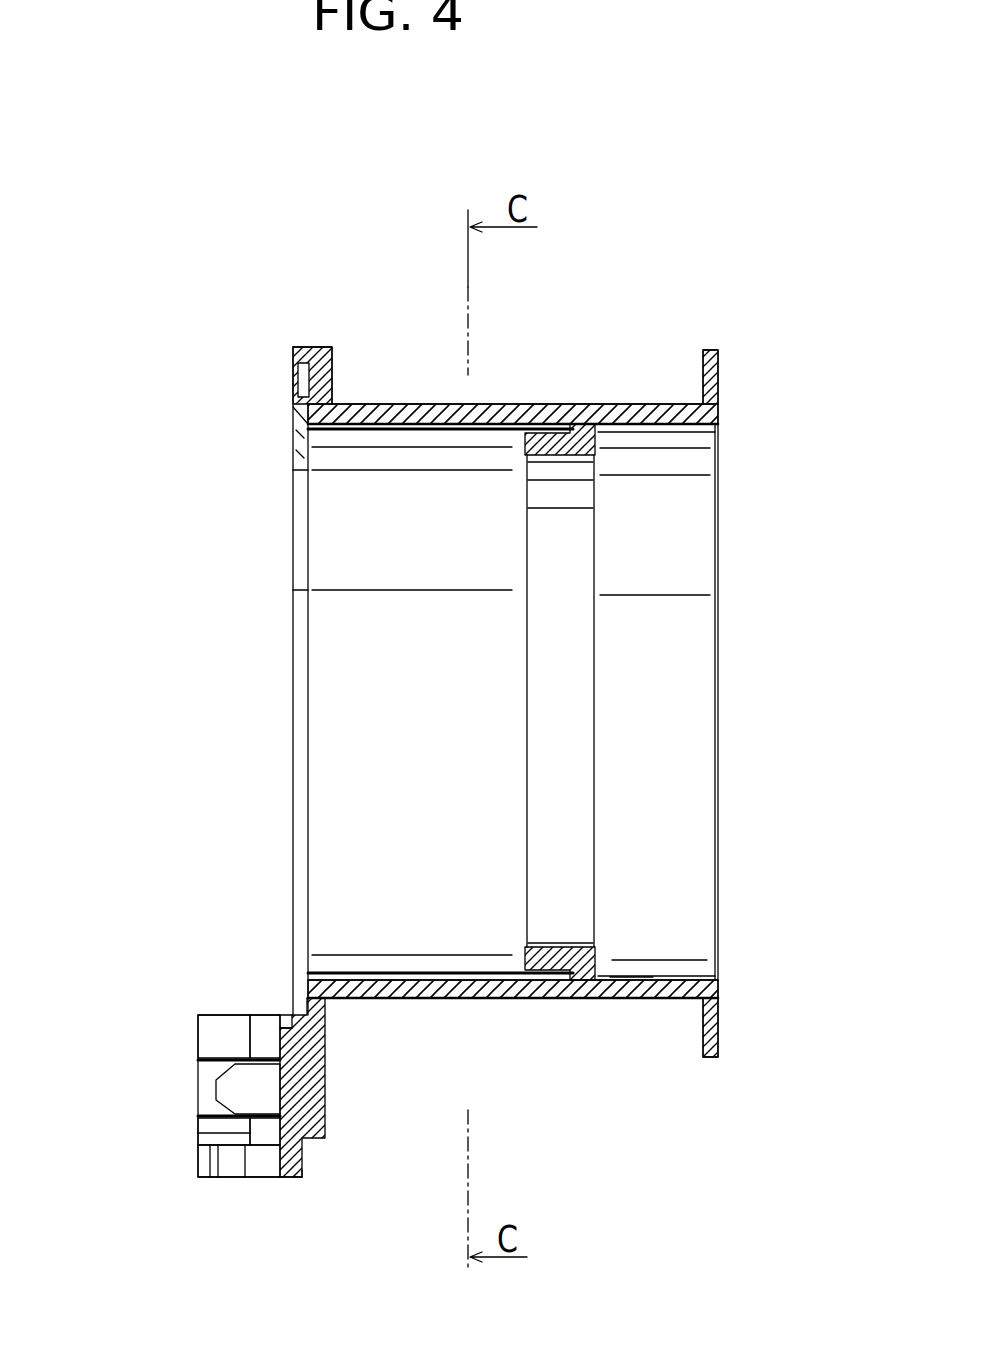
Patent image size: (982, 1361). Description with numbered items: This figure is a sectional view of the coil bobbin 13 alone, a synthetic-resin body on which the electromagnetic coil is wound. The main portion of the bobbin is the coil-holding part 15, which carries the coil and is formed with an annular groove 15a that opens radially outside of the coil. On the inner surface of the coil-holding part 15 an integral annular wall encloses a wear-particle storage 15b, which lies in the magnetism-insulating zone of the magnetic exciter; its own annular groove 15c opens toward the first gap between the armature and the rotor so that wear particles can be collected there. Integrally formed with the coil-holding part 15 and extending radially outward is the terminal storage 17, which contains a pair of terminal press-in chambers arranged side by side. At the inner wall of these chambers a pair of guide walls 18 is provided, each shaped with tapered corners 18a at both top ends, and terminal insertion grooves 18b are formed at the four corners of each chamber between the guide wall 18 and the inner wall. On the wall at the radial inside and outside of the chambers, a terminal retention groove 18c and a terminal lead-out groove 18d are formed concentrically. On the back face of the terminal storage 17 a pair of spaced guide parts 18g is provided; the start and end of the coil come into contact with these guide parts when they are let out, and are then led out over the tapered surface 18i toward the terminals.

The coil bobbin 13 is at (740, 310).
The coil-holding part 15 is at (243, 517).
The annular groove 15a is at (333, 360).
The wear-particle storage 15b is at (578, 540).
The annular groove 15c is at (523, 433).
The terminal storage 17 is at (257, 1121).
The guide wall 18 is at (215, 1088).
The tapered corner 18a is at (215, 1068).
The terminal insertion groove 18b is at (213, 1055).
The terminal retention groove 18c is at (265, 1025).
The terminal lead-out groove 18d is at (262, 1178).
The guide part 18g is at (318, 1102).
The tapered surface 18i is at (298, 1177).